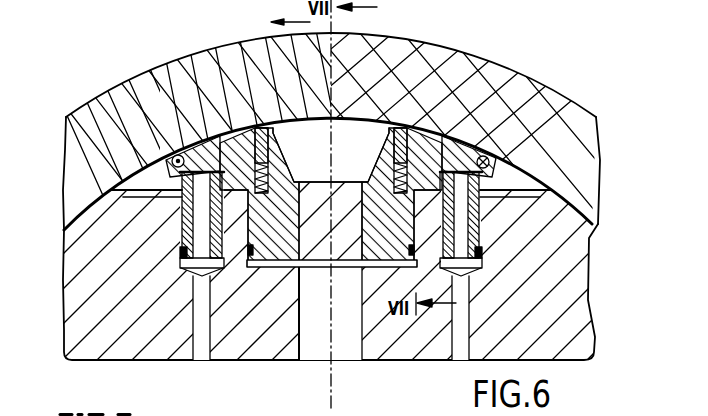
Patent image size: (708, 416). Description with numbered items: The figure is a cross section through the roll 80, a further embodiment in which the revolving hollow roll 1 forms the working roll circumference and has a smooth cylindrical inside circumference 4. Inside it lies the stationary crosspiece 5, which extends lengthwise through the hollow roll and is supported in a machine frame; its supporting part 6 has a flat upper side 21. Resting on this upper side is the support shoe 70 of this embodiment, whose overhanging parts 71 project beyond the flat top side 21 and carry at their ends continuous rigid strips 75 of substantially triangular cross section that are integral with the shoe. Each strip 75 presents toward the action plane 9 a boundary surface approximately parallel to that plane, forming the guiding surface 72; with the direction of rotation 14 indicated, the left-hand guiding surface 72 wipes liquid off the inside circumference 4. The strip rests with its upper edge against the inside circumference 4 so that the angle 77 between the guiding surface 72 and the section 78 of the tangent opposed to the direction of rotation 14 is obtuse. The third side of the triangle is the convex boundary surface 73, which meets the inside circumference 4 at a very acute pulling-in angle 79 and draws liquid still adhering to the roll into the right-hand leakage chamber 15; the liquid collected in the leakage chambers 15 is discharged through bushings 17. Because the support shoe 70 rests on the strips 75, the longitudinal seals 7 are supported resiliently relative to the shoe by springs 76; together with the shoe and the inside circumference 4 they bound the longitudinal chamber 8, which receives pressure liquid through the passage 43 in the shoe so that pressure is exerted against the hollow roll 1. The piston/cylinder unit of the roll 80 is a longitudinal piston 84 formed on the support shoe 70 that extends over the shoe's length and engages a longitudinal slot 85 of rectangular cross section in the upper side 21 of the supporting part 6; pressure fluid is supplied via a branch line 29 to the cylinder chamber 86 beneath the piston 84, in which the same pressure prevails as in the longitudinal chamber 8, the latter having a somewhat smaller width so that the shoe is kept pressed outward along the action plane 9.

The hollow roll 1 is at (424, 80).
The inside circumference 4 is at (602, 178).
The crosspiece 5 is at (591, 231).
The supporting part 6 is at (569, 278).
The longitudinal seals 7 is at (246, 66).
The longitudinal chamber 8 is at (338, 116).
The action plane 9 is at (334, 393).
The direction of rotation 14 is at (293, 21).
The leakage chamber 15 is at (187, 56).
The bushings 17 is at (477, 228).
The upper side 21 is at (133, 198).
The branch line 29 is at (301, 322).
The passage 43 is at (348, 203).
The support shoe 70 is at (405, 80).
The overhanging parts 71 is at (168, 68).
The guiding surface 72 is at (138, 83).
The convex boundary surface 73 is at (80, 115).
The strips 75 is at (108, 100).
The springs 76 is at (288, 172).
The angle 77 is at (186, 158).
The section of the tangent 78 is at (256, 127).
The pulling-in angle 79 is at (594, 115).
The roll 80 is at (579, 66).
The longitudinal piston 84 is at (270, 266).
The longitudinal slot 85 is at (428, 222).
The cylinder chamber 86 is at (372, 268).